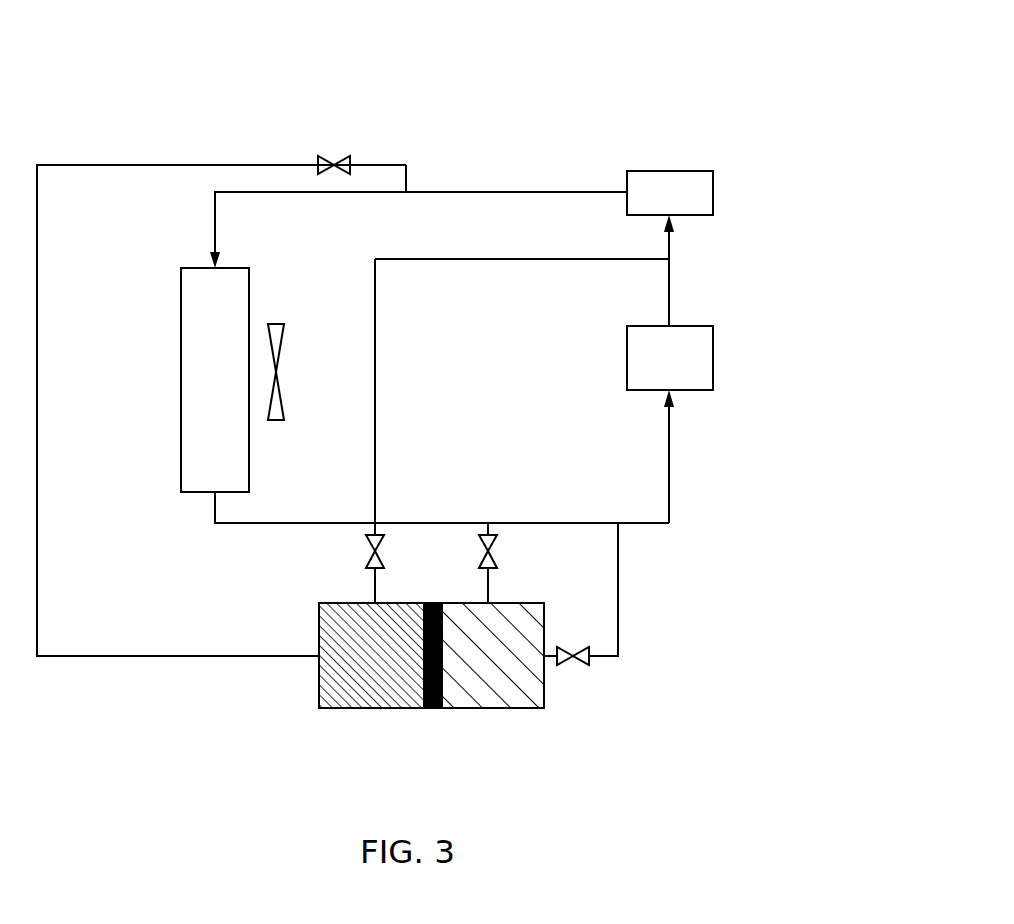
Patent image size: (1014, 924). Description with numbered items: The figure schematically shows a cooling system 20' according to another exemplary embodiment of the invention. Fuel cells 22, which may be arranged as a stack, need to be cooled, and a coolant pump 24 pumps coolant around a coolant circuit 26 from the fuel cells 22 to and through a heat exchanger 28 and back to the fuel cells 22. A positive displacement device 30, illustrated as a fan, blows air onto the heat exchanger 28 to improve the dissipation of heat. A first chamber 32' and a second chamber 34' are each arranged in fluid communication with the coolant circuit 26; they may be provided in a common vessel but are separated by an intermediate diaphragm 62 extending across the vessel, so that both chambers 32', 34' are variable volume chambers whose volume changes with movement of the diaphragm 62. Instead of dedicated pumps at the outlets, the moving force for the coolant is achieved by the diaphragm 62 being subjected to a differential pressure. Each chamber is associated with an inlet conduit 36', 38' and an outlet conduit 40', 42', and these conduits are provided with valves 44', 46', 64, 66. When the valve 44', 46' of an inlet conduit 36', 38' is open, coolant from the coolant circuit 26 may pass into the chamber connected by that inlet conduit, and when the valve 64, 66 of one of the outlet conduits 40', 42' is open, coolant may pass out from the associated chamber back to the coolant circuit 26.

The cooling system 20' is at (221, 329).
The fuel cells 22 is at (713, 350).
The coolant pump 24 is at (669, 171).
The coolant circuit 26 is at (515, 192).
The heat exchanger 28 is at (181, 373).
The positive displacement device 30 is at (277, 366).
The first chamber 32' is at (371, 699).
The second chamber 34' is at (493, 699).
The inlet conduit 36' is at (178, 698).
The inlet conduit 38' is at (528, 585).
The outlet conduit 40' is at (339, 585).
The outlet conduit 42' is at (653, 593).
The valve 44' is at (343, 120).
The valve 46' is at (524, 547).
The diaphragm 62 is at (430, 708).
The valve 64 is at (366, 547).
The valve 66 is at (573, 665).